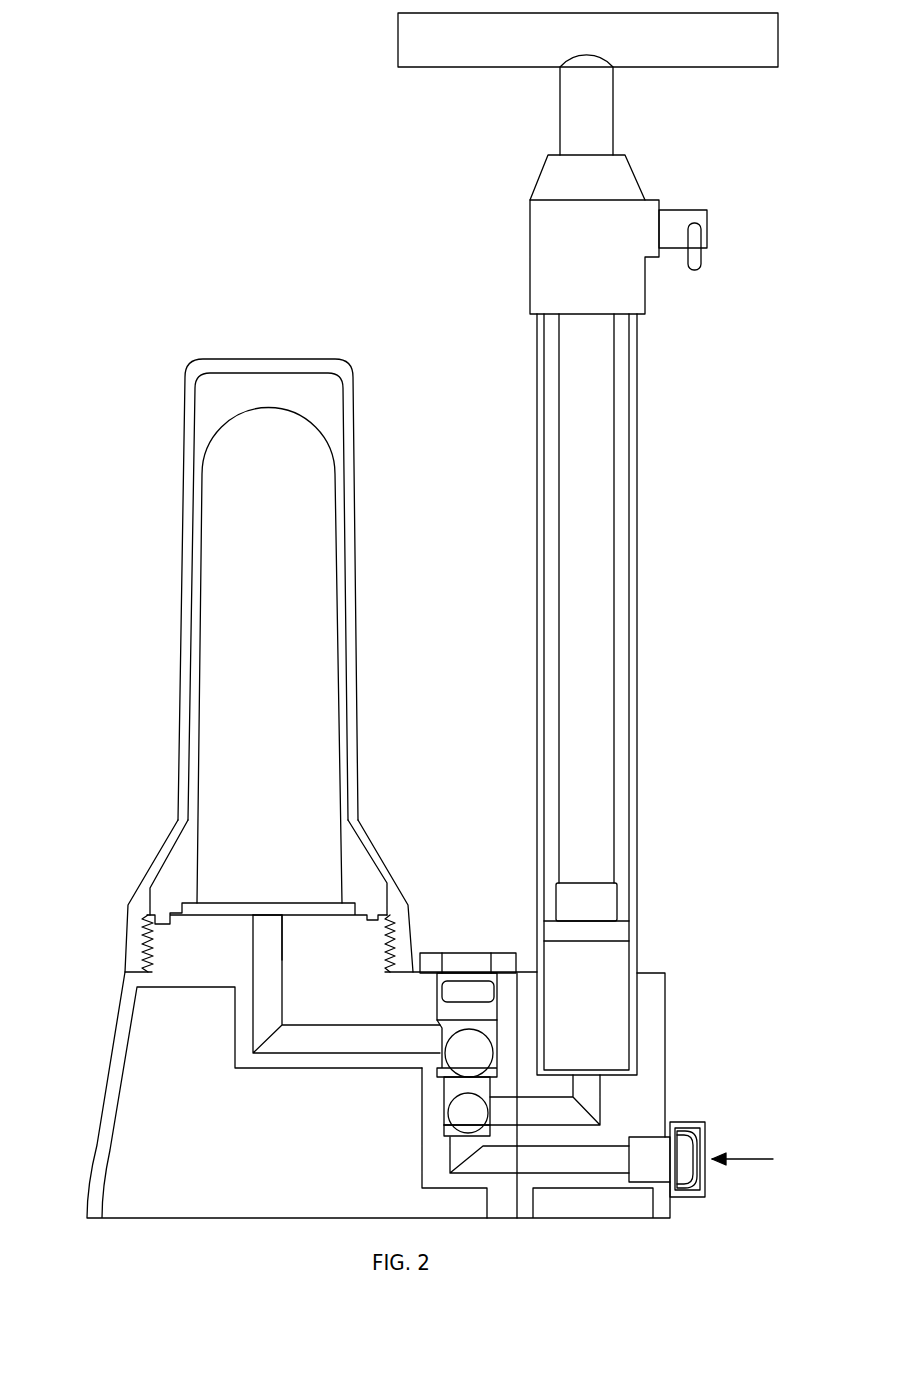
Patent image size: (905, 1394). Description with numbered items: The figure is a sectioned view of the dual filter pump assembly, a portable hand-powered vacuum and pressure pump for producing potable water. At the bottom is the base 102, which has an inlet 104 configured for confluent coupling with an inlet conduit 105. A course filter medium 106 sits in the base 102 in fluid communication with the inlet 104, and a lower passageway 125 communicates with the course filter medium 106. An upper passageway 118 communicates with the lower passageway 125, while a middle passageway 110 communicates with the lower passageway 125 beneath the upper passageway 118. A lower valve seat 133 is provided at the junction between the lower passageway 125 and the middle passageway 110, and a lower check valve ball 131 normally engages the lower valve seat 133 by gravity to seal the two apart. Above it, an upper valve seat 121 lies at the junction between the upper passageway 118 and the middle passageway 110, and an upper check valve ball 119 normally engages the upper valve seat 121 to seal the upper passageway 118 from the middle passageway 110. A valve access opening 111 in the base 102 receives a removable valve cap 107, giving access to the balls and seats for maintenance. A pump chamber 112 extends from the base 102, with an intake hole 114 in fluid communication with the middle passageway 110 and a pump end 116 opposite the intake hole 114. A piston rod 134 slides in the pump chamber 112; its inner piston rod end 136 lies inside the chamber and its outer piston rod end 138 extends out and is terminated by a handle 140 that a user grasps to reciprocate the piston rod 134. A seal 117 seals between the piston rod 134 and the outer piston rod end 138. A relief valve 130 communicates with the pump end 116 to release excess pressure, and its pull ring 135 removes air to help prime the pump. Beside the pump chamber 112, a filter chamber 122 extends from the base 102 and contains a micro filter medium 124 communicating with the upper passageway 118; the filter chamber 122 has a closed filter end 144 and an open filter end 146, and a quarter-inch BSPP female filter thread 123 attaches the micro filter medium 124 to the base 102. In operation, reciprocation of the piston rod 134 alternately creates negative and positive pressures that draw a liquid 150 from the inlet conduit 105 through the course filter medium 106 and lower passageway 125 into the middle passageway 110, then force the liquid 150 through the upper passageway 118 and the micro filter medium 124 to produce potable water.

The base 102 is at (113, 1032).
The inlet 104 is at (652, 1137).
The inlet conduit 105 is at (685, 1198).
The course filter medium 106 is at (697, 1148).
The removable valve cap 107 is at (478, 953).
The middle passageway 110 is at (588, 1087).
The valve access opening 111 is at (437, 983).
The pump chamber 112 is at (638, 758).
The intake hole 114 is at (637, 973).
The pump end 116 is at (540, 178).
The seal 117 is at (553, 202).
The upper passageway 118 is at (268, 937).
The upper check valve ball 119 is at (458, 1030).
The upper valve seat 121 is at (437, 1077).
The filter chamber 122 is at (175, 875).
The BSPP female filter thread 123 is at (283, 917).
The micro filter medium 124 is at (232, 753).
The lower passageway 125 is at (478, 1175).
The relief valve 130 is at (682, 208).
The lower check valve ball 131 is at (458, 1103).
The lower valve seat 133 is at (440, 1133).
The piston rod 134 is at (580, 405).
The pull ring 135 is at (697, 272).
The inner piston rod end 136 is at (615, 883).
The outer piston rod end 138 is at (560, 77).
The handle 140 is at (470, 67).
The closed filter end 144 is at (230, 359).
The open filter end 146 is at (148, 935).
The liquid 150 is at (759, 1160).